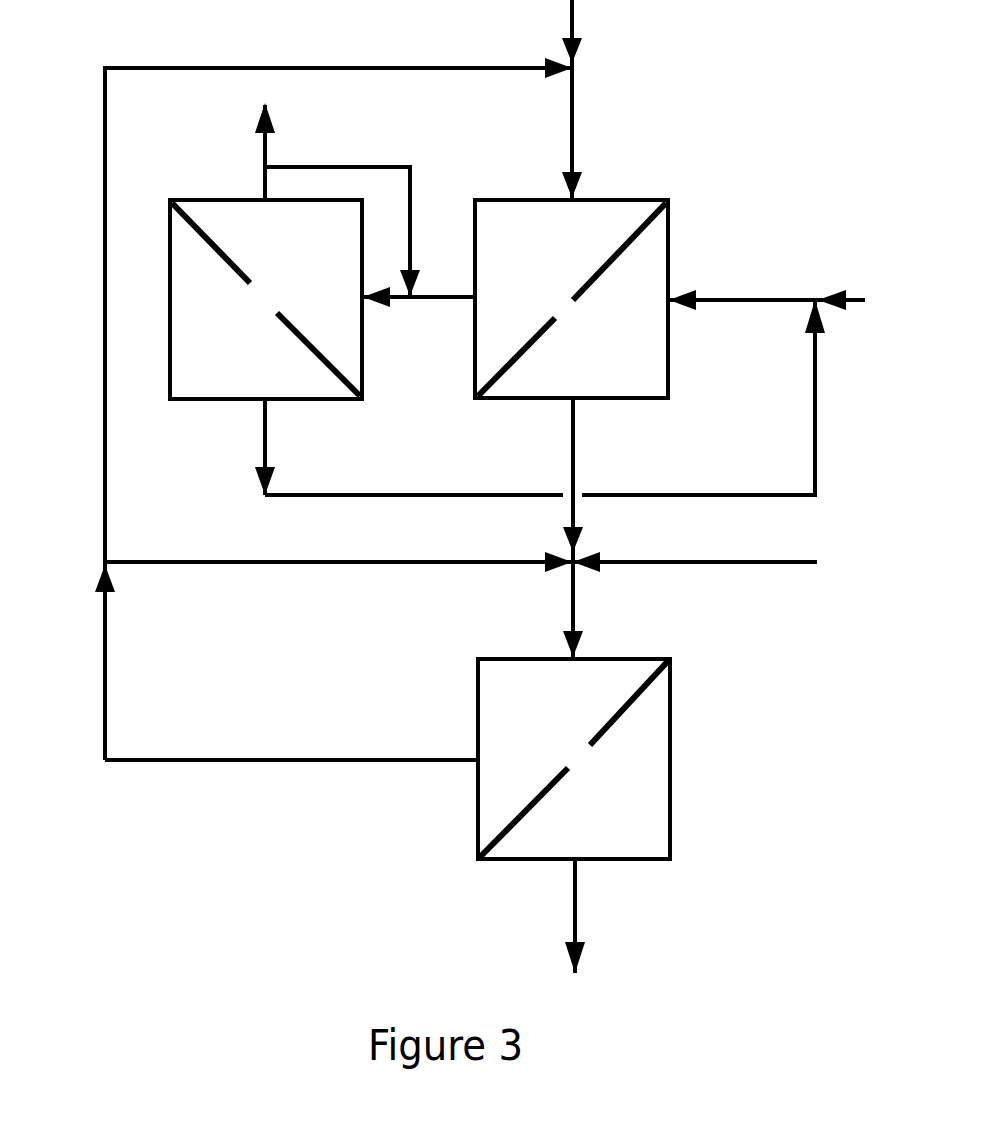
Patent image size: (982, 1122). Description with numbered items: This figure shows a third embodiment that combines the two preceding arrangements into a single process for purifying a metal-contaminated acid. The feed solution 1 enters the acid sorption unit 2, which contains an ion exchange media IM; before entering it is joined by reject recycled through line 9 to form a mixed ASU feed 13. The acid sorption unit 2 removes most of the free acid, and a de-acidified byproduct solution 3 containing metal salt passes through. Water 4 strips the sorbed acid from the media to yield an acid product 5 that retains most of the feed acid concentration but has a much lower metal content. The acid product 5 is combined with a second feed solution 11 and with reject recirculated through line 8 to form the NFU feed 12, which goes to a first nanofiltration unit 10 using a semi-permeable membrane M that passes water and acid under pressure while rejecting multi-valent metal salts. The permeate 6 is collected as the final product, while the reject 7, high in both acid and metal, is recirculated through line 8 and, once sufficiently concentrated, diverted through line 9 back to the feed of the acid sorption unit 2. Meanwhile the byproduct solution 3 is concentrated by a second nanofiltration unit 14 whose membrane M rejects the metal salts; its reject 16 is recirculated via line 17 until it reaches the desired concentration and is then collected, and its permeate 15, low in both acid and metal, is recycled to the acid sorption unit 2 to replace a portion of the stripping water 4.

The feed solution 1 is at (578, 45).
The acid sorption unit 2 is at (571, 299).
The de-acidified byproduct solution 3 is at (455, 296).
The water 4 is at (845, 293).
The acid product 5 is at (575, 517).
The NFU permeate 6 is at (577, 895).
The NFU reject solution 7 is at (412, 758).
The recirculation line 8 is at (445, 565).
The diversion line 9 is at (100, 228).
The first nanofiltration unit 10 is at (574, 759).
The feed solution 11 is at (765, 565).
The NFU feed 12 is at (575, 610).
The mixed ASU feed 13 is at (576, 160).
The second nanofiltration unit 14 is at (266, 299).
The NFU permeate 15 is at (267, 435).
The NFU reject 16 is at (260, 173).
The recirculation line 17 is at (350, 167).
The ion exchange media IM is at (630, 245).
The semi-permeable membrane M is at (330, 360).